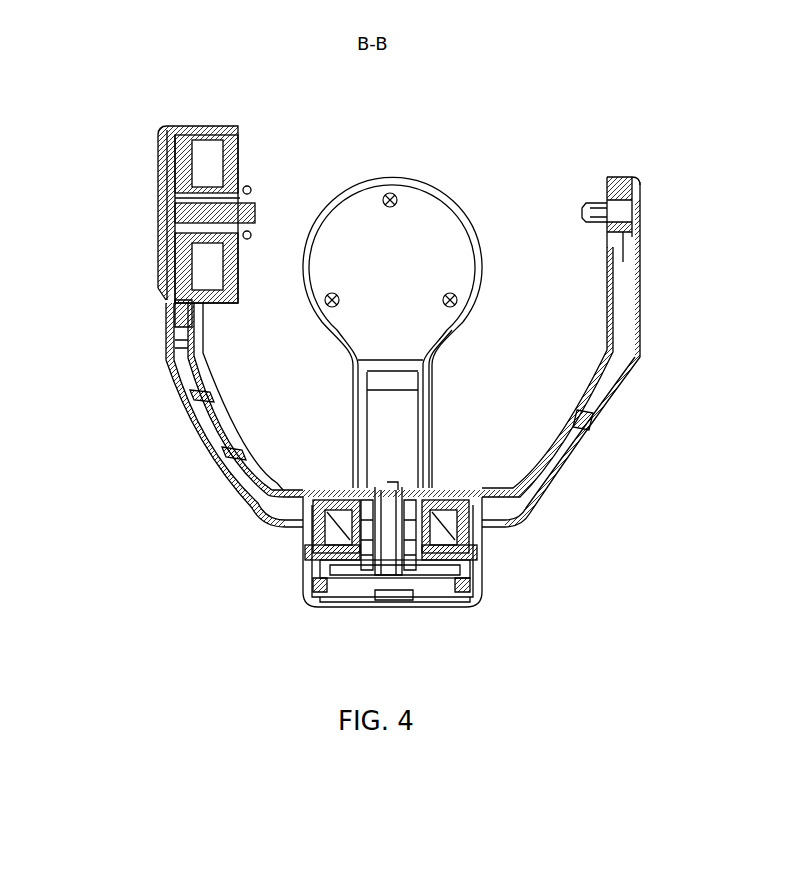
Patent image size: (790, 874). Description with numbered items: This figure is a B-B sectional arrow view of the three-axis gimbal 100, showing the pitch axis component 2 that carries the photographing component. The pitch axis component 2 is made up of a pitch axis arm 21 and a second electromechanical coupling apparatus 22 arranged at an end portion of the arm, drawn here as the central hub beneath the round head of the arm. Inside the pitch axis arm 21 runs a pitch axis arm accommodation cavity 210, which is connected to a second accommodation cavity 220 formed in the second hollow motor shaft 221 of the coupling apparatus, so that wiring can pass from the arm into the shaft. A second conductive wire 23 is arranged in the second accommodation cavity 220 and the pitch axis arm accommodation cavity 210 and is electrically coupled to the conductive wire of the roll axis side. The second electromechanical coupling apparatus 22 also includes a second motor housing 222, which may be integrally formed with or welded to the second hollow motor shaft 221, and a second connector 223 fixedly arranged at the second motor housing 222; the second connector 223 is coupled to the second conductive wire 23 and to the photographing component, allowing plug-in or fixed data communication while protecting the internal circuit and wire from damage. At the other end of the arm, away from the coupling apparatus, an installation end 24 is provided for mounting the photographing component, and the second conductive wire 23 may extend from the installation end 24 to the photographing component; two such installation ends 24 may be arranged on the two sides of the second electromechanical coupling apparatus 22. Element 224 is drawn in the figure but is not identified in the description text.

The three-axis gimbal 100 is at (112, 33).
The pitch axis component 2 is at (258, 522).
The pitch axis arm 21 is at (193, 418).
The pitch axis arm accommodation cavity 210 is at (185, 365).
The second conductive wire 23 is at (213, 453).
The installation end 24 is at (227, 165).
The second electromechanical coupling apparatus 22 is at (480, 548).
The second accommodation cavity 220 is at (303, 563).
The second hollow motor shaft 221 is at (480, 573).
The second motor housing 222 is at (480, 550).
The second connector 223 is at (417, 607).
The fixing member 224 is at (332, 610).